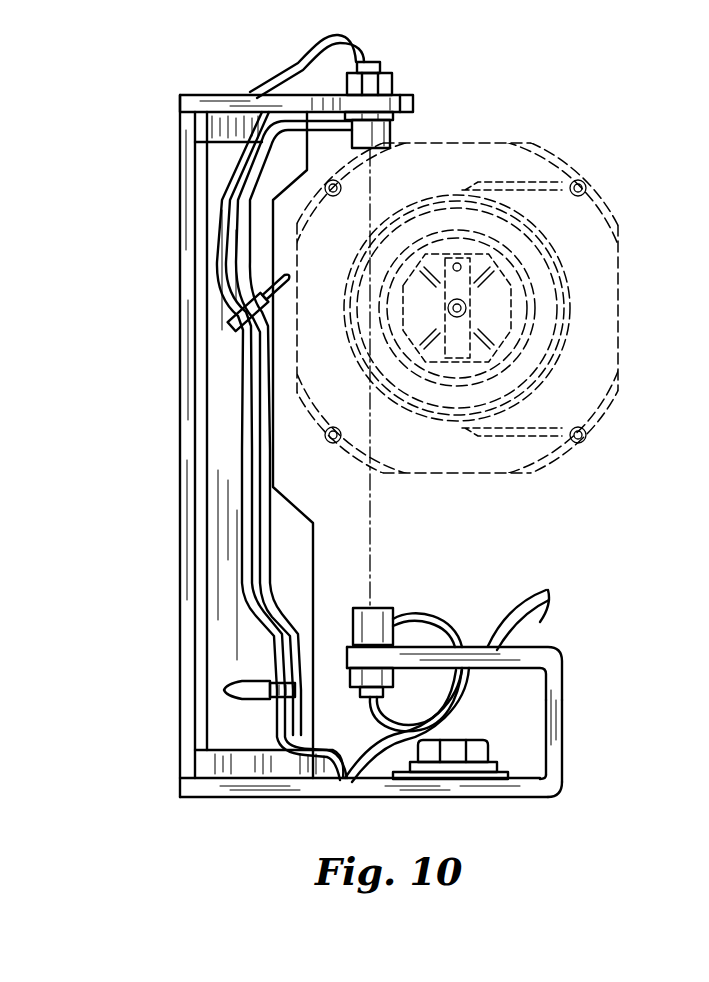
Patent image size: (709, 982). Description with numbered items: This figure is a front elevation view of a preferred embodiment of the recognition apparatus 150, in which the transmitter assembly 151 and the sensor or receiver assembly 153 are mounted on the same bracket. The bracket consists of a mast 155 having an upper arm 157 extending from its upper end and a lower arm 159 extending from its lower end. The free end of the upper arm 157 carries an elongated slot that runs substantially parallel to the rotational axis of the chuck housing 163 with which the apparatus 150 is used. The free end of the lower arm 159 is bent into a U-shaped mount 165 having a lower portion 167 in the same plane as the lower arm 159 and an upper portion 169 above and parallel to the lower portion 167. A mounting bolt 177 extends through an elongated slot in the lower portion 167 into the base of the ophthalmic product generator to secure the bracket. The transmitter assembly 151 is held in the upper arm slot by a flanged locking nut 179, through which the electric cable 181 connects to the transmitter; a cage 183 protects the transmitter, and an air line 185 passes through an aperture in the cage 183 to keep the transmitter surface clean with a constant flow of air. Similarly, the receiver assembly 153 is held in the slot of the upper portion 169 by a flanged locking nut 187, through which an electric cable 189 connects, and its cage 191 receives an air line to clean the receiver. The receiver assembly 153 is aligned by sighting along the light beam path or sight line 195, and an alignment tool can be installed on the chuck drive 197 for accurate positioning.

The recognition apparatus 150 is at (165, 364).
The transmitter assembly 151 is at (412, 127).
The receiver assembly 153 is at (432, 606).
The mast 155 is at (190, 410).
The upper arm 157 is at (223, 102).
The lower arm 159 is at (262, 793).
The chuck housing 163 is at (498, 162).
The U-shaped mount 165 is at (563, 712).
The lower portion 167 is at (535, 790).
The upper portion 169 is at (552, 658).
The mounting bolt 177 is at (455, 752).
The flanged locking nut 179 is at (396, 74).
The electric cable 181 is at (322, 58).
The cage 183 is at (370, 150).
The air line 185 is at (336, 196).
The flanged locking nut 187 is at (395, 688).
The electric cable 189 is at (370, 703).
The cage 191 is at (374, 622).
The sight line 195 is at (380, 498).
The chuck drive 197 is at (523, 305).